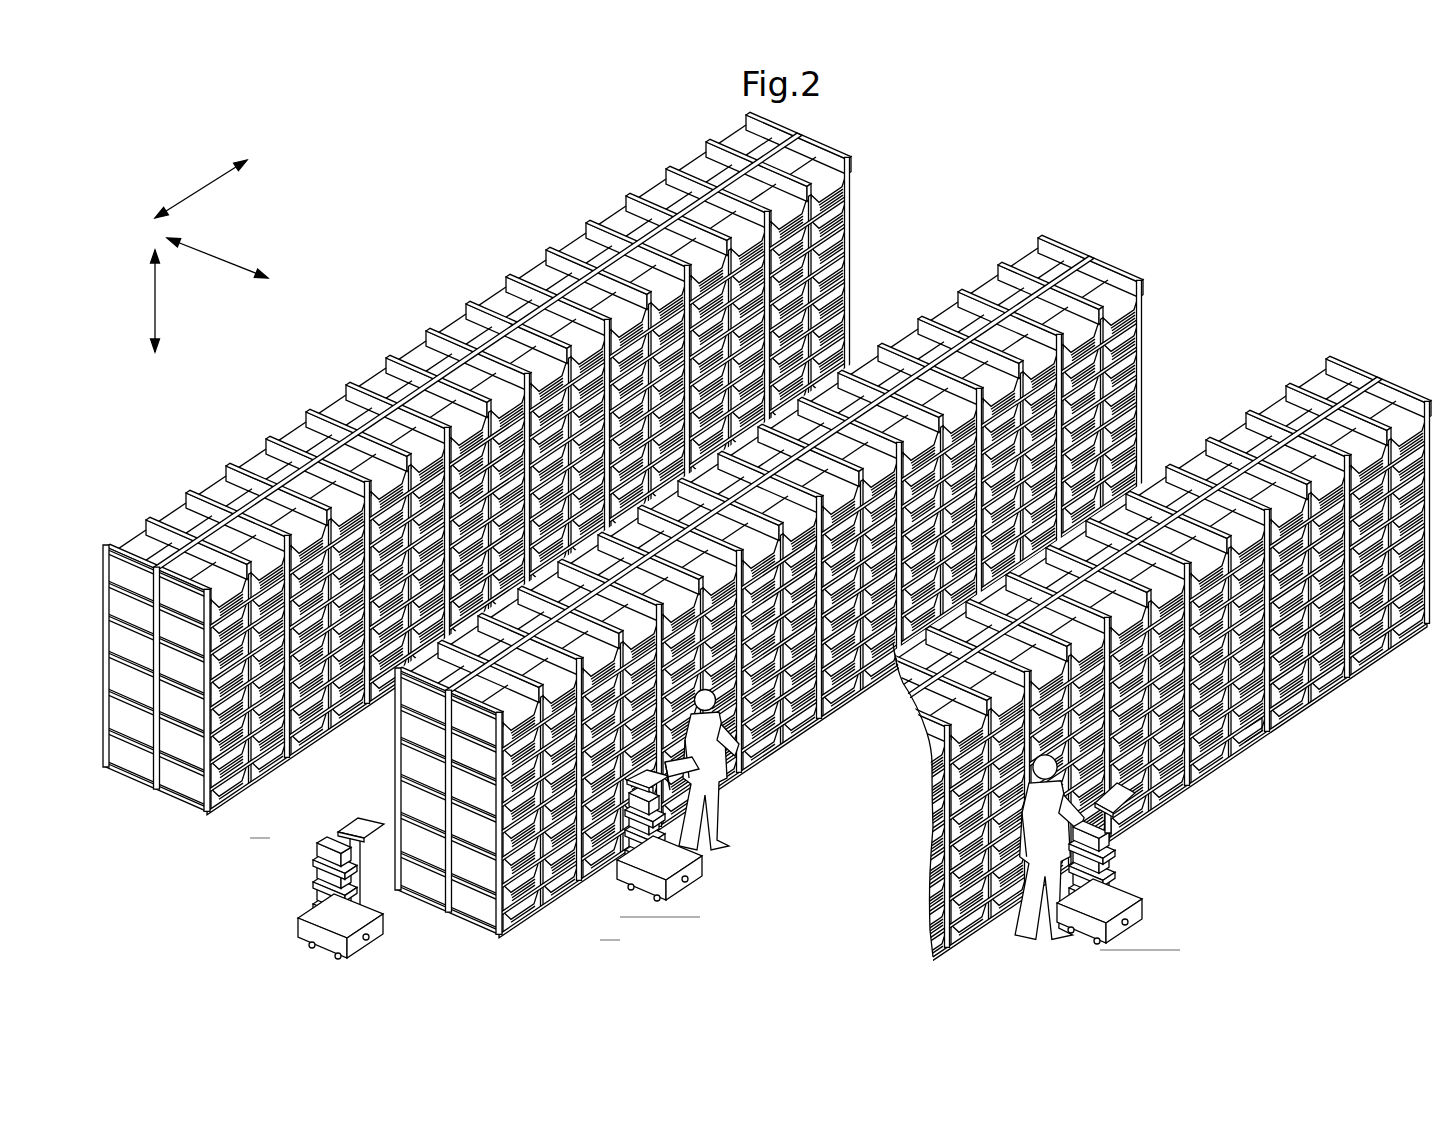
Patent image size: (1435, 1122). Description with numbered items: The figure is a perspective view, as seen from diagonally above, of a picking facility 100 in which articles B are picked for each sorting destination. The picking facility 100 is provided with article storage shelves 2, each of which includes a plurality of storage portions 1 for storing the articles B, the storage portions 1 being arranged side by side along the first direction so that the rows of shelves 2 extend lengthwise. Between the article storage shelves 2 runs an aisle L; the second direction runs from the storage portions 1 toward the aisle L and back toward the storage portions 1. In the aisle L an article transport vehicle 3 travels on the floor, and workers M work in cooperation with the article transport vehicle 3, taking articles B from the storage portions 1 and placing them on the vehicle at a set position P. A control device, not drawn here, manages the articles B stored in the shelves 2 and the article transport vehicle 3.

The picking facility 100 is at (767, 585).
The storage portion 1 is at (793, 564).
The article storage shelf 2 is at (767, 585).
The article transport vehicle 3 is at (715, 873).
The article B is at (977, 760).
The worker M is at (881, 828).
The set position P is at (908, 948).
The aisle L is at (390, 911).